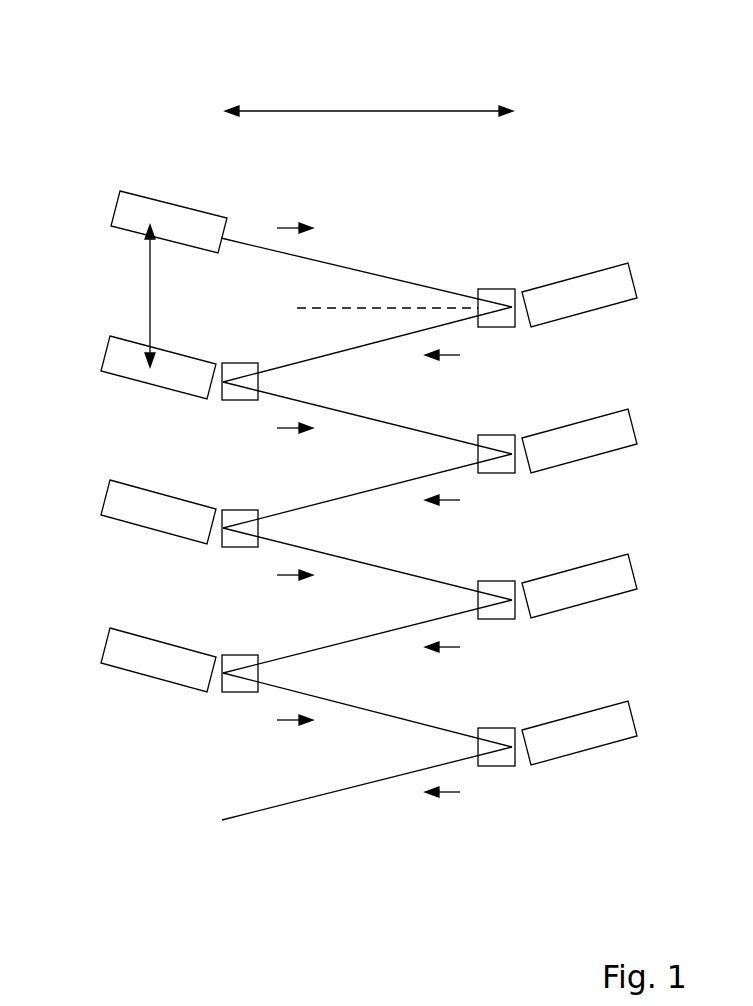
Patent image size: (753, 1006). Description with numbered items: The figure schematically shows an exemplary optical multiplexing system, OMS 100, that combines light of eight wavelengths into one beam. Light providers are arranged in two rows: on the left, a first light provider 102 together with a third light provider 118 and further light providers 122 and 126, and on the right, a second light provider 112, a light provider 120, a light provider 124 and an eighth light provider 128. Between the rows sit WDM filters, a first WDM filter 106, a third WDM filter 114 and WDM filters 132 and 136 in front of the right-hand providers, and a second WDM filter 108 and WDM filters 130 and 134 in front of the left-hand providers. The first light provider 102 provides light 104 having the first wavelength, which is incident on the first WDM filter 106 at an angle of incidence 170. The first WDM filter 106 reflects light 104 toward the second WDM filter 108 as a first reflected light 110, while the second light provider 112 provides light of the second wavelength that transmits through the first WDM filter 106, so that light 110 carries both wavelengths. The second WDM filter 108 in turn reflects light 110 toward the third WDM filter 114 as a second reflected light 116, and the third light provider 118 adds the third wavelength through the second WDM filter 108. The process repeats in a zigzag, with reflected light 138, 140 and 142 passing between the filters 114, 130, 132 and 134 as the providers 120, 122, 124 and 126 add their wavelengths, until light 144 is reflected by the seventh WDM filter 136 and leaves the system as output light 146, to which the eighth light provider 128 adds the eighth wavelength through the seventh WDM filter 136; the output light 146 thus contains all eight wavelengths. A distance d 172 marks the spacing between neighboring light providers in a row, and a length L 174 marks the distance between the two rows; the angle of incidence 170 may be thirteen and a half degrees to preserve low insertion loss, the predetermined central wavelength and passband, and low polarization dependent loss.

The OMS 100 is at (354, 436).
The first light provider 102 is at (168, 200).
The light 104 is at (333, 264).
The first WDM filter 106 is at (497, 290).
The second WDM filter 108 is at (243, 357).
The first reflected light 110 is at (333, 355).
The second light provider 112 is at (572, 278).
The third WDM filter 114 is at (497, 435).
The second reflected light 116 is at (407, 427).
The third light provider 118 is at (168, 350).
The light provider 120 is at (568, 423).
The light provider 122 is at (165, 497).
The light provider 124 is at (570, 568).
The light provider 126 is at (165, 643).
The eighth light provider 128 is at (570, 713).
The WDM filter 130 is at (240, 510).
The WDM filter 132 is at (497, 582).
The WDM filter 134 is at (242, 655).
The seventh WDM filter 136 is at (497, 728).
The reflected light 138 is at (333, 500).
The reflected light 140 is at (405, 573).
The reflected light 142 is at (333, 645).
The light 144 is at (405, 719).
The output light 146 is at (293, 803).
The angle of incidence 170 is at (403, 308).
The distance d 172 is at (152, 308).
The length L 174 is at (373, 110).